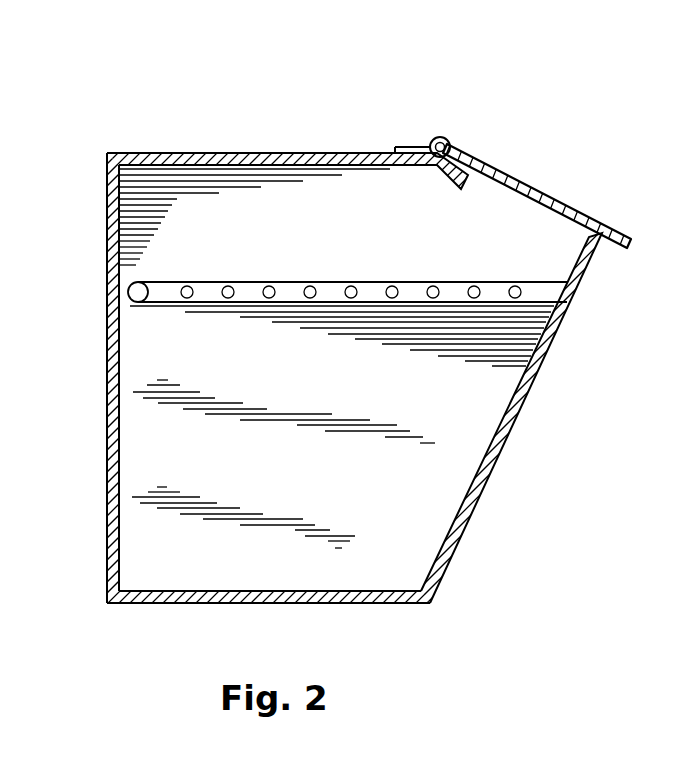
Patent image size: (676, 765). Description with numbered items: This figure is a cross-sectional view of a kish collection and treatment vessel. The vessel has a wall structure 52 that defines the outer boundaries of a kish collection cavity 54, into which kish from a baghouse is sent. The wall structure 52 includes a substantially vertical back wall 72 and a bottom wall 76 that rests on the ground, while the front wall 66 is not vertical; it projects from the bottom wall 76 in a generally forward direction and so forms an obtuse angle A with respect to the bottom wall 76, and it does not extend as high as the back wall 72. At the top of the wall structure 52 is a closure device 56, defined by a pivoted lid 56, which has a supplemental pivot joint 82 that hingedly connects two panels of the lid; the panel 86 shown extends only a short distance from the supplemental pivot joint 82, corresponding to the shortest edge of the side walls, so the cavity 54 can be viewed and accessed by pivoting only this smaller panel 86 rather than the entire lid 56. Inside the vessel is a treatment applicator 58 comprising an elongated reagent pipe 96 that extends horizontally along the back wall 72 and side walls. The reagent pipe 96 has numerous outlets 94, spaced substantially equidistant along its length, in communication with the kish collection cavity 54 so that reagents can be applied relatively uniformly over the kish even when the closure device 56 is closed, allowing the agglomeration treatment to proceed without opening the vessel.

The wall structure 52 is at (338, 333).
The back wall 72 is at (107, 272).
The closure device 56 is at (378, 150).
The supplemental pivot joint 82 is at (440, 136).
The panel 86 is at (538, 196).
The reagent pipe 96 is at (160, 283).
The outlets 94 is at (515, 286).
The treatment applicator 58 is at (347, 296).
The kish collection cavity 54 is at (318, 478).
The bottom wall 76 is at (196, 591).
The front wall 66 is at (498, 457).
The obtuse angle A is at (440, 542).